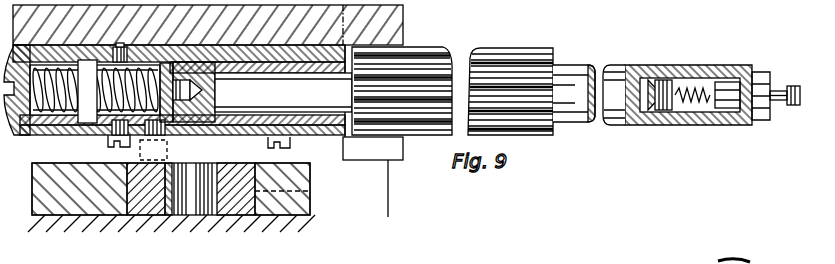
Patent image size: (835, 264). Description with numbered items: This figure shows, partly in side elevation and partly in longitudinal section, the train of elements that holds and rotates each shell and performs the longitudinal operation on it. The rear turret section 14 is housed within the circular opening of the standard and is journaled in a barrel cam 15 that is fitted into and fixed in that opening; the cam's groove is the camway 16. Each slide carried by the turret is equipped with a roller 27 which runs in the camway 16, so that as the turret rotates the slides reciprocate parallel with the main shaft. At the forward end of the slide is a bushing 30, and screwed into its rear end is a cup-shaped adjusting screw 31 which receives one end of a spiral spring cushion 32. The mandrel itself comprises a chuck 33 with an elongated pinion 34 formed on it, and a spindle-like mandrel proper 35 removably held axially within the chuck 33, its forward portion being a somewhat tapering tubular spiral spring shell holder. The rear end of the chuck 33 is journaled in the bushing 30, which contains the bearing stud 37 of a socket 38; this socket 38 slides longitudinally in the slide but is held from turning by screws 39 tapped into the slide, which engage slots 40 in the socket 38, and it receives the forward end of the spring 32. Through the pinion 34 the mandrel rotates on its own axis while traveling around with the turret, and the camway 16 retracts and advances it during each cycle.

The rear turret section 14 is at (208, 25).
The barrel cam 15 is at (309, 213).
The camway 16 is at (309, 191).
The roller 27 is at (147, 212).
The bushing 30 is at (326, 140).
The adjusting screw 31 is at (20, 131).
The spiral spring cushion 32 is at (86, 121).
The chuck 33 is at (617, 72).
The elongated pinion 34 is at (495, 57).
The mandrel proper 35 is at (785, 107).
The bearing stud 37 is at (191, 132).
The socket 38 is at (163, 126).
The screws 39 is at (113, 47).
The slots 40 is at (174, 33).